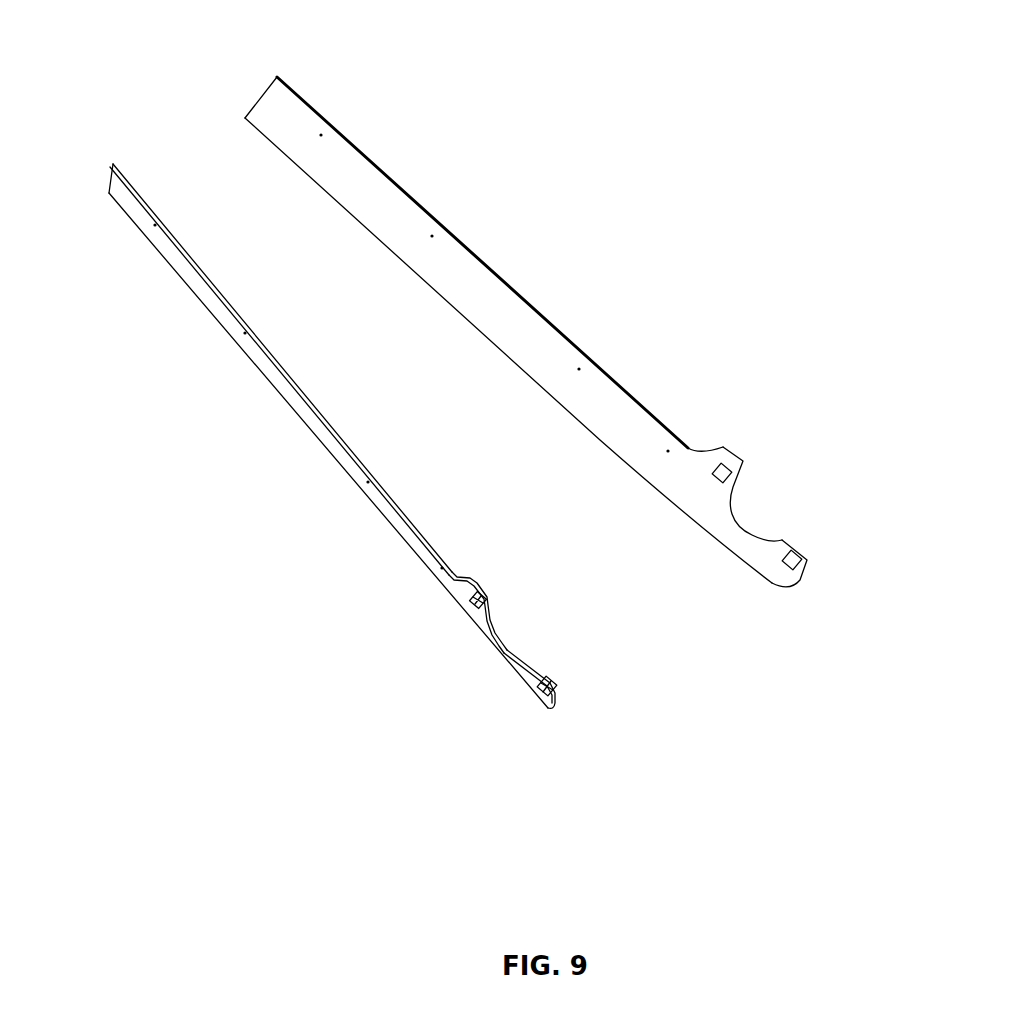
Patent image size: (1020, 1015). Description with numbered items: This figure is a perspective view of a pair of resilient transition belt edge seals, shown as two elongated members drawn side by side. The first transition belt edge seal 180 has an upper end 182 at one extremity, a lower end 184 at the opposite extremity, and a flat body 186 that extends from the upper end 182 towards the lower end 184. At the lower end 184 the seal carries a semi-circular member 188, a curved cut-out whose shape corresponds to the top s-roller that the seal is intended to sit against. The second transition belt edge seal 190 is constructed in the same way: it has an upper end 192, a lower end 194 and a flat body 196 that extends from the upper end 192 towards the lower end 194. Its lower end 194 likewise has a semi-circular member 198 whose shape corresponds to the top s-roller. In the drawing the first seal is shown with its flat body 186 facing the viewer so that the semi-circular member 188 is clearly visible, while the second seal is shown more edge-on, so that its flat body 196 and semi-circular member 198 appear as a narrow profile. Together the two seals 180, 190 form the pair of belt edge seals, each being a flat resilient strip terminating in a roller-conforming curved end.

The first transition belt edge seal 180 is at (542, 315).
The upper end 182 is at (263, 90).
The lower end 184 is at (793, 580).
The flat body 186 is at (433, 268).
The semi-circular member 188 is at (742, 527).
The second transition belt edge seal 190 is at (322, 447).
The upper end 192 is at (108, 175).
The lower end 194 is at (552, 707).
The flat body 196 is at (258, 358).
The semi-circular member 198 is at (505, 649).